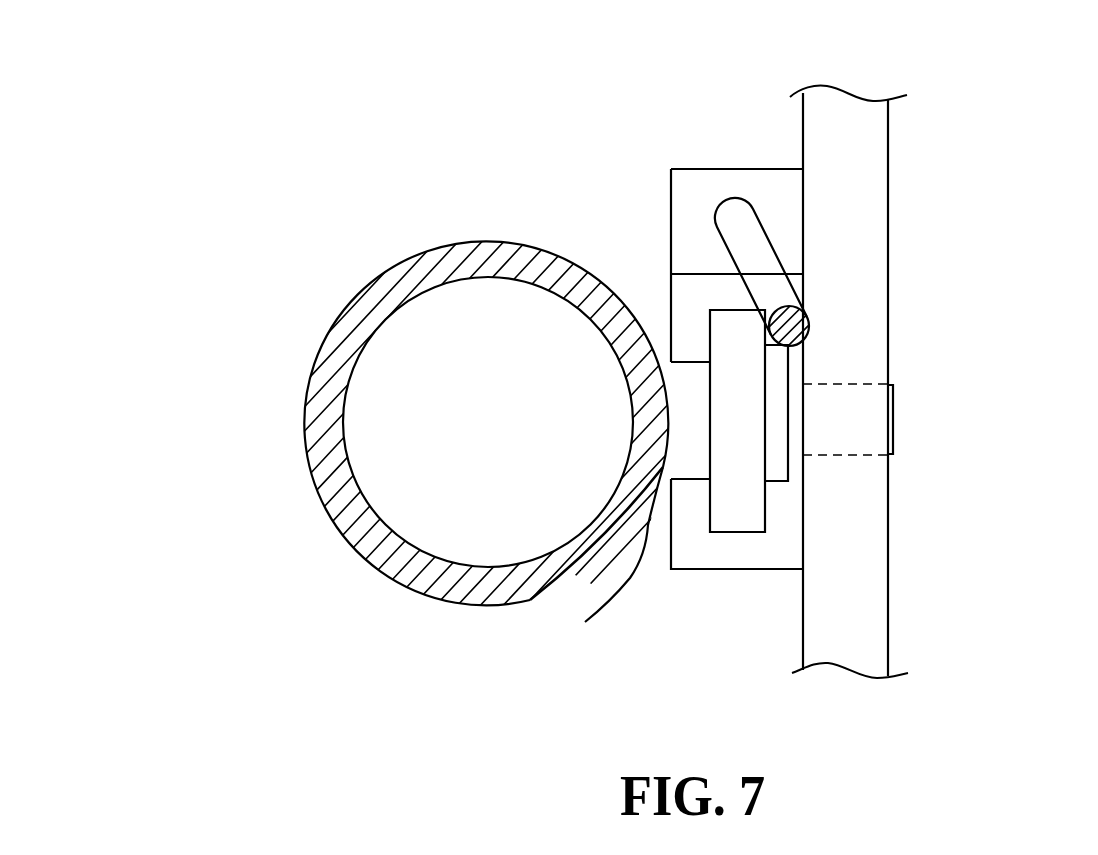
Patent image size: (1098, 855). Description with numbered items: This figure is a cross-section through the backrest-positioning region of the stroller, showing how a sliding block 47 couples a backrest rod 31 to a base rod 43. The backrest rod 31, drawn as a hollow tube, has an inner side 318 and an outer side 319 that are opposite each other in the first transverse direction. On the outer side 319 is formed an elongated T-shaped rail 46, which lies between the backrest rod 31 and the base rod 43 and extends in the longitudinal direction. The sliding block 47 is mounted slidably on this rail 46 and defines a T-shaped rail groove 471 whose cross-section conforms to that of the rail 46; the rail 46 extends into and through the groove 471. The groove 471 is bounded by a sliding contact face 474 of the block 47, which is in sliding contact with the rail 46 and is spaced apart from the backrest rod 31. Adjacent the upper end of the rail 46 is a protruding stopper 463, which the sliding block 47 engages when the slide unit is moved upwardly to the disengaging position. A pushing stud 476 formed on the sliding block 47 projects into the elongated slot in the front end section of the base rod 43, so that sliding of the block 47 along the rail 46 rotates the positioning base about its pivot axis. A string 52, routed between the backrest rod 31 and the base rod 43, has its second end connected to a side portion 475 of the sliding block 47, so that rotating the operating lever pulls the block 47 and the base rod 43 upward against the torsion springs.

The backrest rod 31 is at (433, 593).
The inner side 318 is at (307, 413).
The outer side 319 is at (585, 622).
The base rod 43 is at (888, 572).
The T-shaped rail 46 is at (735, 468).
The stopper 463 is at (782, 468).
The sliding block 47 is at (660, 576).
The T-shaped rail groove 471 is at (722, 308).
The sliding contact face 474 is at (700, 224).
The side portion 475 is at (768, 187).
The pushing stud 476 is at (893, 420).
The string 52 is at (745, 228).